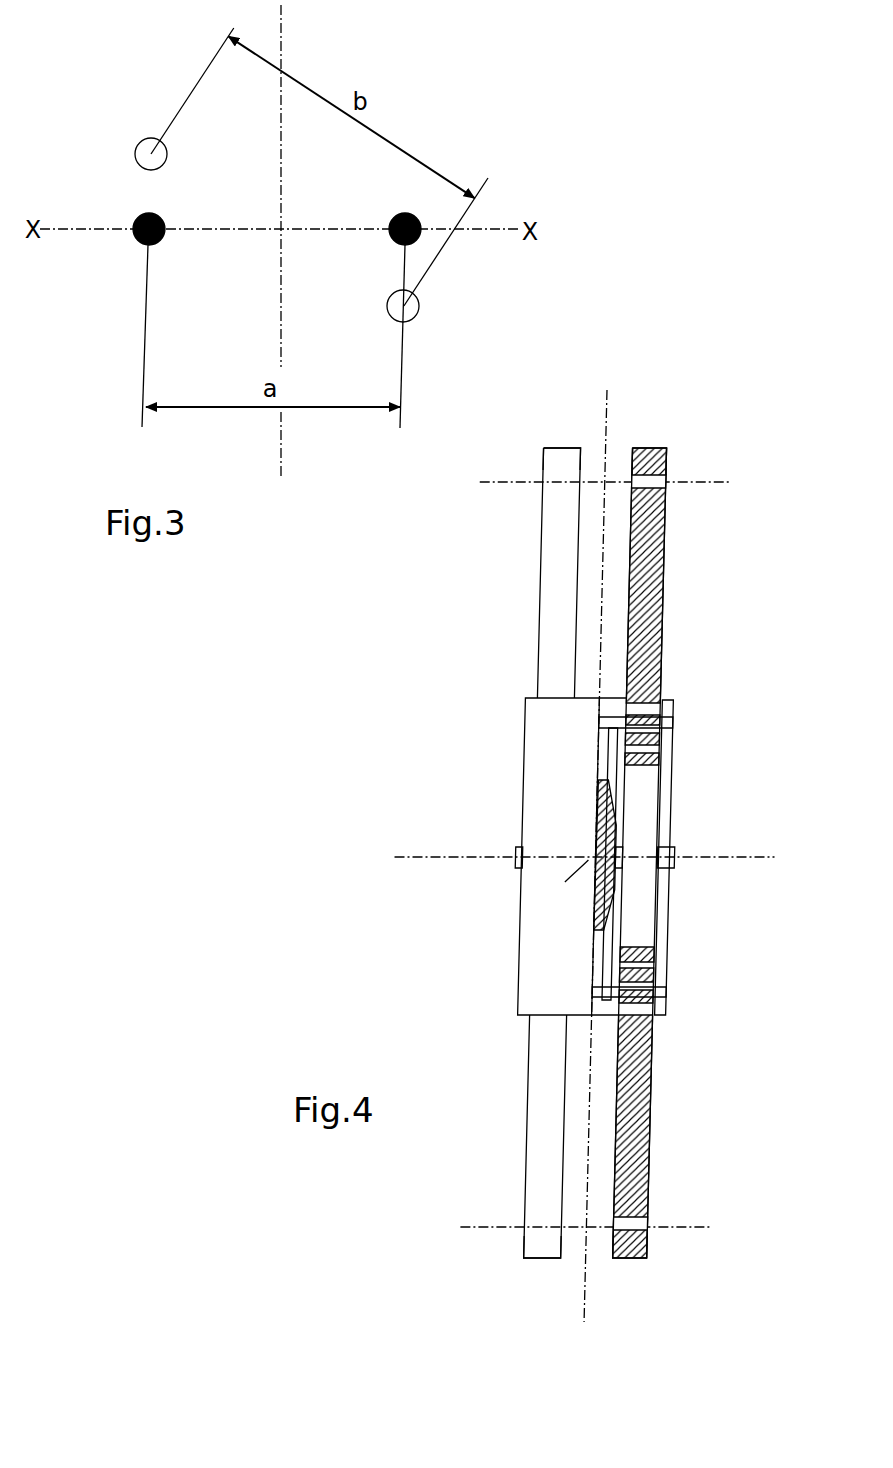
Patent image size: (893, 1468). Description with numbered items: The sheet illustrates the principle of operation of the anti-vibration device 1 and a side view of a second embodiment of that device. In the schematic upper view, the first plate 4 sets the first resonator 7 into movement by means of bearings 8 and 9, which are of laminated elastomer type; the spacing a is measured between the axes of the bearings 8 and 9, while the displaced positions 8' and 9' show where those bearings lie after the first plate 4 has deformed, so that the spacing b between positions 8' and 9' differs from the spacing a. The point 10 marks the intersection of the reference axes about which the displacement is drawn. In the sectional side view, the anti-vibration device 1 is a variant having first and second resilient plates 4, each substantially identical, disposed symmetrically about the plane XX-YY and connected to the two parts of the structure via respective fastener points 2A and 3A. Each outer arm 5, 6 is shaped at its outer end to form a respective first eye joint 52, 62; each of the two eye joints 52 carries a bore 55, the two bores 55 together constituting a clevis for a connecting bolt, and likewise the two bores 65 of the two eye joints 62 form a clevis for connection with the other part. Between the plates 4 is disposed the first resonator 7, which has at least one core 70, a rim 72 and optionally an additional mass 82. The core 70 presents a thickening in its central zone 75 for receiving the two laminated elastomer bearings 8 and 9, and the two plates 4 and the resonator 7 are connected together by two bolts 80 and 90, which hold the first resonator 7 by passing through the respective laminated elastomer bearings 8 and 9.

In FIG. 4, the anti-vibration device 1 is at (696, 622).
In FIG. 4, the fastener point 2A is at (668, 480).
In FIG. 4, the fastener point 3A is at (652, 1229).
In FIG. 4, the resilient plate 4 is at (587, 1136).
In FIG. 4, the outer arm 5 is at (656, 575).
In FIG. 4, the outer arm 6 is at (656, 1128).
In FIG. 4, the first resonator 7 is at (601, 861).
In FIG. 3, the laminated elastomer bearing 8 is at (127, 320).
In FIG. 3, the displaced position of bearing 8' is at (164, 99).
In FIG. 3, the laminated elastomer bearing 9 is at (392, 297).
In FIG. 3, the displaced position of bearing 9' is at (437, 262).
In FIG. 3, the pivot point 10 is at (278, 229).
In FIG. 4, the first eye joint 52 is at (556, 448).
In FIG. 4, the bore 55 is at (666, 488).
In FIG. 4, the first eye joint 62 is at (553, 1260).
In FIG. 4, the bore 65 is at (650, 1224).
In FIG. 4, the core 70 is at (607, 760).
In FIG. 4, the rim 72 is at (526, 856).
In FIG. 4, the central zone 75 is at (608, 832).
In FIG. 4, the bolt 80 is at (714, 875).
In FIG. 4, the additional mass 82 is at (532, 953).
In FIG. 4, the bolt 90 is at (685, 866).